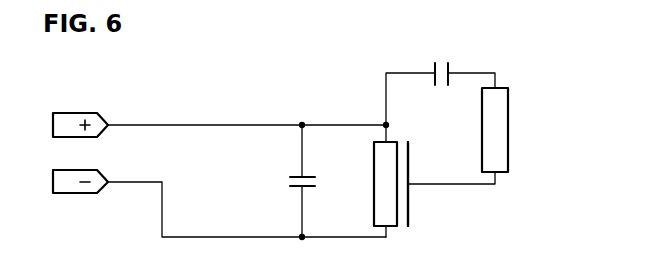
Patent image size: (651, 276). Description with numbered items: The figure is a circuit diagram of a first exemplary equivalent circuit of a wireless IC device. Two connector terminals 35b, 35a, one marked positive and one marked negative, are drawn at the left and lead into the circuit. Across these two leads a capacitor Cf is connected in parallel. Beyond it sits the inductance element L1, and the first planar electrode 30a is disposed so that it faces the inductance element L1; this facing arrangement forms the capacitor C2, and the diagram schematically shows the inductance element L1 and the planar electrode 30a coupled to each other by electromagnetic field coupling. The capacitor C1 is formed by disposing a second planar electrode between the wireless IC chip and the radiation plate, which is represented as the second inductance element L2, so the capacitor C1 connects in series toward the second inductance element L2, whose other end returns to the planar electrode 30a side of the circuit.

The positive terminal connector 35b is at (67, 113).
The negative terminal connector 35a is at (70, 193).
The first planar electrode 30a is at (408, 212).
The filter capacitor Cf is at (287, 181).
The inductance element L1 is at (371, 184).
The second inductance element L2 is at (510, 130).
The capacitor C1 is at (444, 62).
The capacitor C2 is at (407, 201).